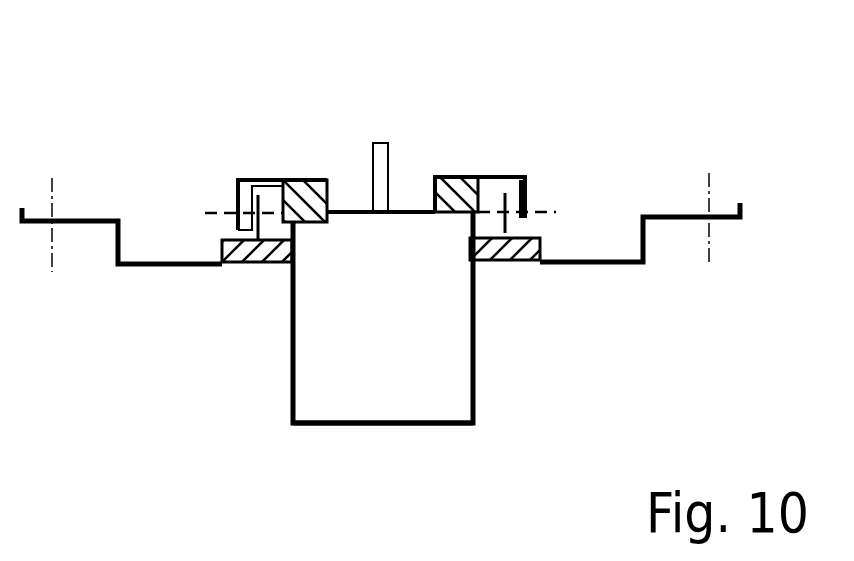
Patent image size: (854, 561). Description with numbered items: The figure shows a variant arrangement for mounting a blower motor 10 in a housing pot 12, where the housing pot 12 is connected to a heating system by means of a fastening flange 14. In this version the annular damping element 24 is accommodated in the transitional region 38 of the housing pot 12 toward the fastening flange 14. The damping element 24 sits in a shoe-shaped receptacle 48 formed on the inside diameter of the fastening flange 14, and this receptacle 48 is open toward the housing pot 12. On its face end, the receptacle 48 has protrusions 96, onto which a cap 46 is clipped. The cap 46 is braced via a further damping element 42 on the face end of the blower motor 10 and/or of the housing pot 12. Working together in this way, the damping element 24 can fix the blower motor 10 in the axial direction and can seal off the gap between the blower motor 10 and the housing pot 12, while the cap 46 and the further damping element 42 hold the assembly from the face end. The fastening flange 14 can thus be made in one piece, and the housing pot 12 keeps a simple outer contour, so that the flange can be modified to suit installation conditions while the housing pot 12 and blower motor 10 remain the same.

The blower motor 10 is at (447, 378).
The housing pot 12 is at (292, 385).
The fastening flange 14 is at (670, 213).
The damping element 24 is at (240, 255).
The transitional region 38 is at (260, 148).
The further damping element 42 is at (322, 180).
The cap 46 is at (505, 177).
The shoe-shaped receptacle 48 is at (542, 237).
The protrusions 96 is at (240, 230).